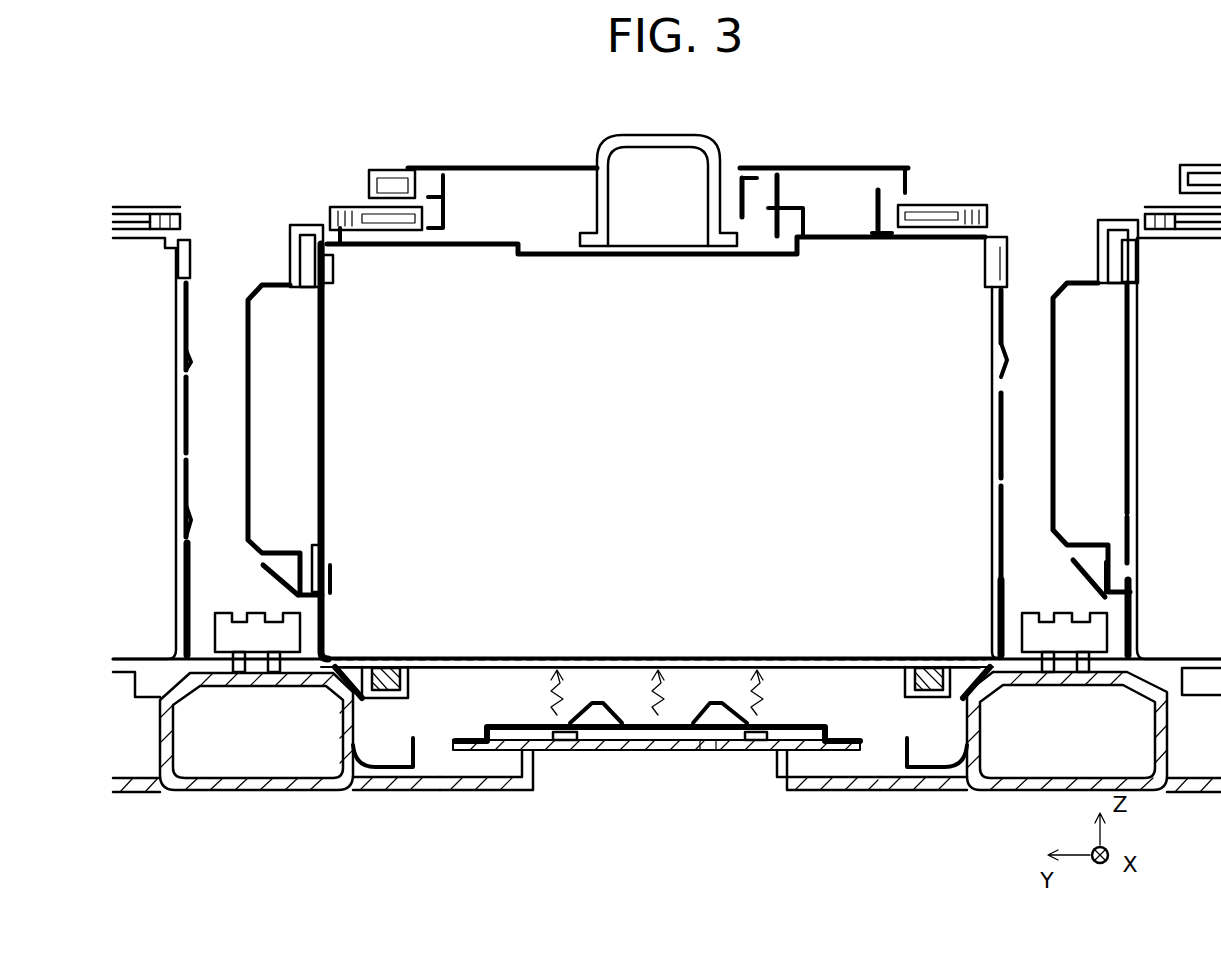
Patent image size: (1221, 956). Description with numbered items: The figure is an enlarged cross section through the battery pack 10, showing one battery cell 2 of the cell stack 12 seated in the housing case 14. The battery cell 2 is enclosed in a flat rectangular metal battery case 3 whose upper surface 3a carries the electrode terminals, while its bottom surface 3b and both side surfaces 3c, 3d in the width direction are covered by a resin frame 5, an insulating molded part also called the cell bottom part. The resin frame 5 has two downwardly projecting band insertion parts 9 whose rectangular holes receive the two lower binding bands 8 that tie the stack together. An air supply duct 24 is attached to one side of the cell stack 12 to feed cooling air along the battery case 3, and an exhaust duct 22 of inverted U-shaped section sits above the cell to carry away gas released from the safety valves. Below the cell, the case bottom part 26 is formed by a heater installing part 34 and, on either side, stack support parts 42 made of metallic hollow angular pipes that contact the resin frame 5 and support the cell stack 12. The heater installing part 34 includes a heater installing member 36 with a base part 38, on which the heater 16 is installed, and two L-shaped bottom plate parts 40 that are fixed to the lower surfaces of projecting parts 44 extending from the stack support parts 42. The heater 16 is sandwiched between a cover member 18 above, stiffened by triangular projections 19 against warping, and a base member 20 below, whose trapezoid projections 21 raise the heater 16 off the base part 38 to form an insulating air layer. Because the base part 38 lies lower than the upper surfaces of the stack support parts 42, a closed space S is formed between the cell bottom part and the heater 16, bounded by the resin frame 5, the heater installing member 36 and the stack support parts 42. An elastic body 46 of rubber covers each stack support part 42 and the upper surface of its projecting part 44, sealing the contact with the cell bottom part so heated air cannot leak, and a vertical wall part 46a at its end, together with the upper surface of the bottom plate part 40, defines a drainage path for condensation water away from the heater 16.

The battery cell 2 is at (667, 470).
The battery case 3 is at (990, 241).
The upper surface 3a is at (440, 238).
The bottom surface 3b is at (525, 668).
The side surface 3c is at (317, 430).
The side surface 3d is at (1000, 480).
The resin frame 5 is at (813, 668).
The binding band 8 is at (387, 668).
The band insertion part 9 is at (410, 682).
The battery pack 10 is at (968, 131).
The cell stack 12 is at (1002, 186).
The housing case 14 is at (1060, 655).
The heater 16 is at (707, 750).
The cover member 18 is at (834, 725).
The projection 19 is at (613, 720).
The base member 20 is at (712, 745).
The projection 21 is at (562, 745).
The exhaust duct 22 is at (663, 135).
The air supply duct 24 is at (262, 284).
The case bottom part 26 is at (332, 805).
The heater installing part 34 is at (783, 688).
The heater installing member 36 is at (805, 790).
The base part 38 is at (656, 752).
The bottom plate part 40 is at (488, 792).
The stack support part 42 is at (243, 670).
The projecting part 44 is at (368, 790).
The elastic body 46 is at (353, 667).
The vertical wall part 46a is at (410, 748).
The space S is at (580, 683).